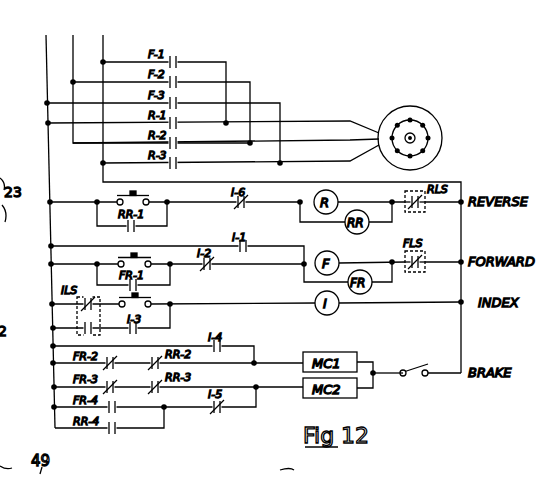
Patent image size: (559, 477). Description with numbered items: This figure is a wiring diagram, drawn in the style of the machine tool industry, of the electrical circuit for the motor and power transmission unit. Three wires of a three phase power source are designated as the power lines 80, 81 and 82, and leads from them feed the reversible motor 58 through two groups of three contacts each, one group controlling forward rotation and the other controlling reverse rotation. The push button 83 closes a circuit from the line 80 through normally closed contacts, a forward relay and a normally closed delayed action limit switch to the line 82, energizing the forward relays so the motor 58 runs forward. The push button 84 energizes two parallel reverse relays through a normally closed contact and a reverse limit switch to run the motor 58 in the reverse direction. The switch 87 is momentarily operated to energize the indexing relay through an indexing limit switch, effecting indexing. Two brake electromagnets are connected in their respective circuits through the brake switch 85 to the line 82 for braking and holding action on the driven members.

The power line 80 is at (46, 50).
The power line 81 is at (73, 50).
The power line 82 is at (103, 50).
The reversible motor 58 is at (427, 119).
The push button 84 is at (118, 195).
The push button 83 is at (118, 257).
The switch 87 is at (150, 298).
The brake switch 85 is at (417, 367).